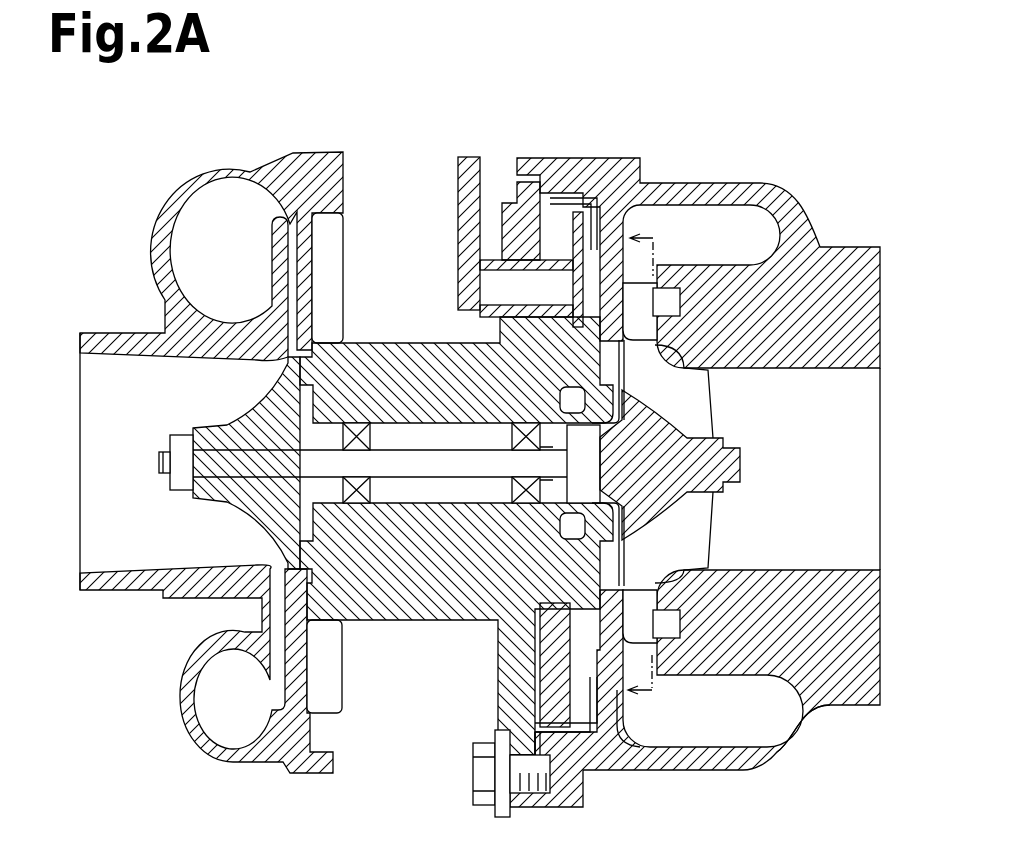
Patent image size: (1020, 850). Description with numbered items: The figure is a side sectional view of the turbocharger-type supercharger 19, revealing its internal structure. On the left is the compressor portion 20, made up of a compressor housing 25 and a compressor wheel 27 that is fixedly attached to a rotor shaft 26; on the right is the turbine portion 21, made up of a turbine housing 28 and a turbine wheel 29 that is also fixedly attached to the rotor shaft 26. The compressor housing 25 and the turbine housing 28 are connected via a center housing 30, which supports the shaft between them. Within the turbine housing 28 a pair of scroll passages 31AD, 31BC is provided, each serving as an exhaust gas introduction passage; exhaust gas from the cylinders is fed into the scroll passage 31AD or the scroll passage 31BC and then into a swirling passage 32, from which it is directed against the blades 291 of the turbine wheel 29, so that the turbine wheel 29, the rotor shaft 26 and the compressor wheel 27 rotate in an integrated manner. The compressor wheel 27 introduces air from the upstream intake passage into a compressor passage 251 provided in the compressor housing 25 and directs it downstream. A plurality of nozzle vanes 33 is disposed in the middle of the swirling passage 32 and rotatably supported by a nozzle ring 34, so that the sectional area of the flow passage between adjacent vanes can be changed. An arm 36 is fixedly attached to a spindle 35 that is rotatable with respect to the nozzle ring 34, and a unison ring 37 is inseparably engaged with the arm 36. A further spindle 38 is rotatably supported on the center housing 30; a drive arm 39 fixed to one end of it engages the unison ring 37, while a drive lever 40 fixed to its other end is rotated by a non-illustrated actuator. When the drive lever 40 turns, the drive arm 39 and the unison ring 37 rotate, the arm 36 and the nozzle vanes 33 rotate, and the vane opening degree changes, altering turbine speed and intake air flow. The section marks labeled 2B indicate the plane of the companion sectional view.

The turbocharger-type supercharger 19 is at (794, 140).
The compressor portion 20 is at (237, 143).
The turbine portion 21 is at (668, 127).
The compressor housing 25 is at (162, 238).
The compressor passage 251 is at (97, 545).
The rotor shaft 26 is at (428, 470).
The compressor wheel 27 is at (227, 427).
The turbine housing 28 is at (828, 706).
The turbine wheel 29 is at (730, 465).
The blades 291 is at (700, 397).
The center housing 30 is at (407, 610).
The scroll passage 31AD is at (727, 217).
The scroll passage 31BC is at (733, 737).
The swirling passage 32 is at (640, 660).
The nozzle vanes 33 is at (655, 328).
The nozzle ring 34 is at (600, 582).
The spindle 35 is at (633, 733).
The arm 36 is at (573, 657).
The unison ring 37 is at (568, 198).
The spindle 38 is at (490, 285).
The drive arm 39 is at (560, 225).
The drive lever 40 is at (466, 240).
The section line 2B is at (640, 468).